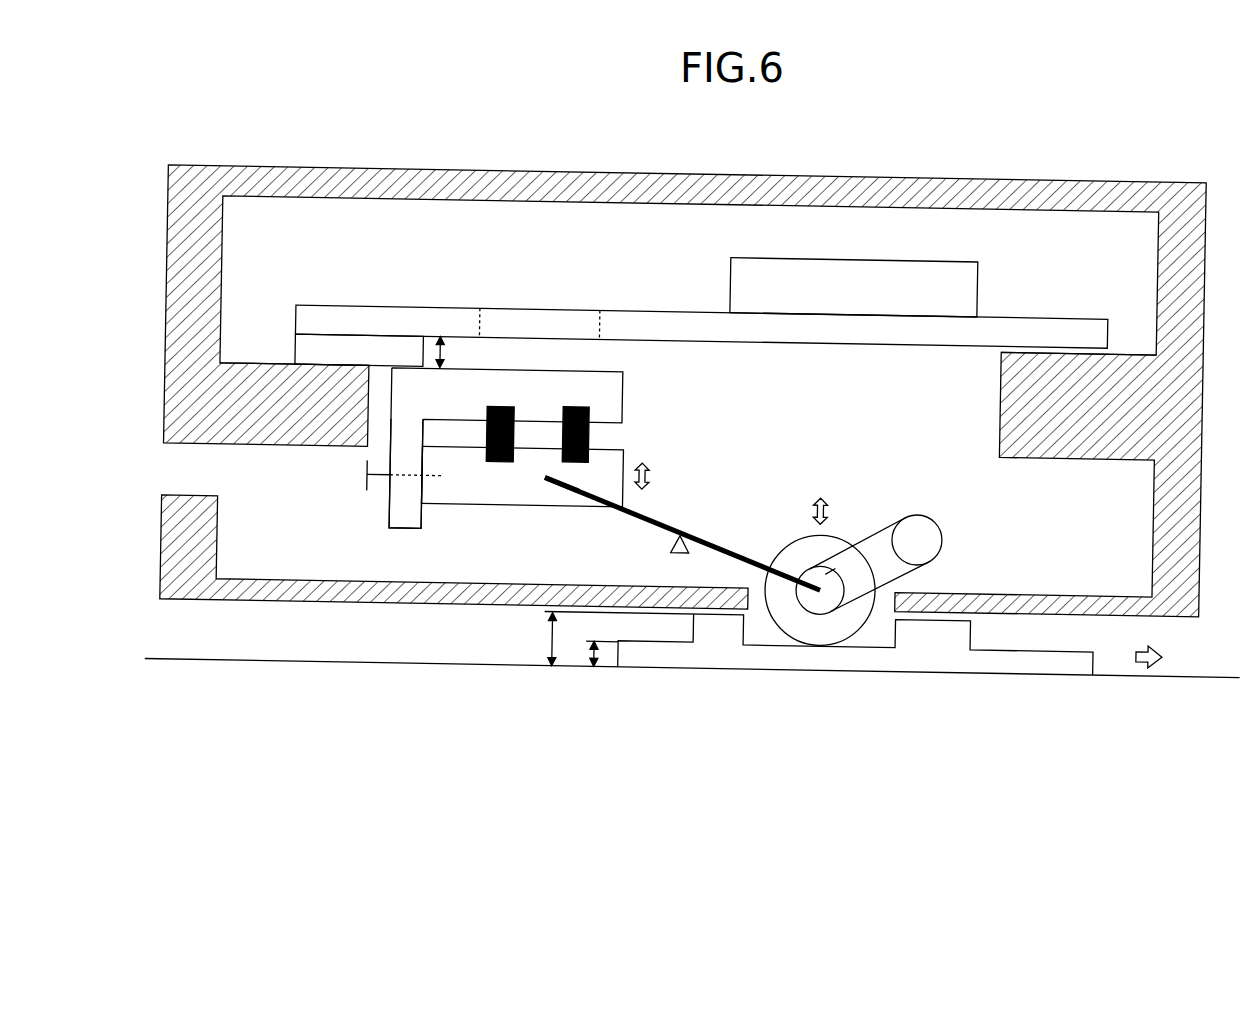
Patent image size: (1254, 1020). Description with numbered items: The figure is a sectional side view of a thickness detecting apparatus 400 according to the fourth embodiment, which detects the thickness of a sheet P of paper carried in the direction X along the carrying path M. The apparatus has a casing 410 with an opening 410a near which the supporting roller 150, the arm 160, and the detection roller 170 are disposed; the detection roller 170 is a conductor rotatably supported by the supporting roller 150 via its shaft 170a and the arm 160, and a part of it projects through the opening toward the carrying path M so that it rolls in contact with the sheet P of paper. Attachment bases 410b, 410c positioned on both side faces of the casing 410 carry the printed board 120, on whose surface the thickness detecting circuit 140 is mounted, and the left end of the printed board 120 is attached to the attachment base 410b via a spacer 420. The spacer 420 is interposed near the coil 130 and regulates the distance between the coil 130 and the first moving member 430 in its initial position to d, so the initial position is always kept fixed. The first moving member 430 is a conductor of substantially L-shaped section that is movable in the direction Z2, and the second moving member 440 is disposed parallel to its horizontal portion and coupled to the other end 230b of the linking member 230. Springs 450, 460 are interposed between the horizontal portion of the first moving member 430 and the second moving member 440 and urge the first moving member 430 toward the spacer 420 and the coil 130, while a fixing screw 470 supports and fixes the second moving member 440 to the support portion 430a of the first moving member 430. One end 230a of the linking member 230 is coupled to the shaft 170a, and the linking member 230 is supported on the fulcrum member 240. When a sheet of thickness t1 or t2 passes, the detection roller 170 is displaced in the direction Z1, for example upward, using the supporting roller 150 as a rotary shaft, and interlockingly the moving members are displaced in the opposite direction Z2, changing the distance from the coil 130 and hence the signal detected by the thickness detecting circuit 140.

The thickness detecting apparatus 400 is at (1084, 114).
The casing 410 is at (500, 168).
The opening 410a is at (751, 607).
The attachment base 410b is at (236, 373).
The attachment base 410c is at (1135, 344).
The printed board 120 is at (658, 316).
The coil 130 is at (518, 308).
The thickness detecting circuit 140 is at (970, 293).
The spacer 420 is at (364, 356).
The first moving member 430 is at (623, 399).
The support portion 430a is at (394, 525).
The second moving member 440 is at (462, 499).
The spring 450 is at (487, 434).
The spring 460 is at (563, 432).
The fixing screw 470 is at (368, 489).
The linking member 230 is at (662, 516).
The one end of linking member 230a is at (823, 598).
The other end of linking member 230b is at (571, 476).
The fulcrum member 240 is at (666, 550).
The detection roller 170 is at (782, 556).
The shaft 170a is at (835, 570).
The arm 160 is at (875, 537).
The supporting roller 150 is at (939, 536).
The carrying path M is at (429, 668).
The sheet of paper P is at (1069, 643).
The direction X is at (1151, 660).
The direction Z1 is at (816, 495).
The direction Z2 is at (654, 474).
The distance d is at (452, 353).
The thickness t1 is at (586, 652).
The thickness t2 is at (545, 638).